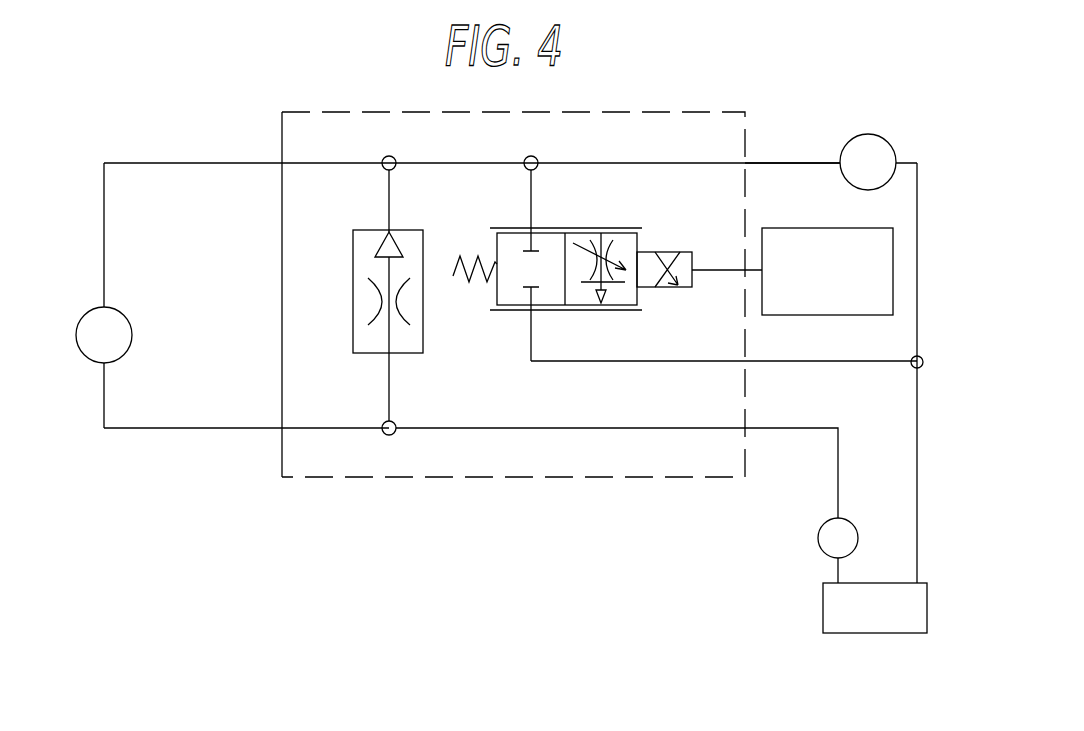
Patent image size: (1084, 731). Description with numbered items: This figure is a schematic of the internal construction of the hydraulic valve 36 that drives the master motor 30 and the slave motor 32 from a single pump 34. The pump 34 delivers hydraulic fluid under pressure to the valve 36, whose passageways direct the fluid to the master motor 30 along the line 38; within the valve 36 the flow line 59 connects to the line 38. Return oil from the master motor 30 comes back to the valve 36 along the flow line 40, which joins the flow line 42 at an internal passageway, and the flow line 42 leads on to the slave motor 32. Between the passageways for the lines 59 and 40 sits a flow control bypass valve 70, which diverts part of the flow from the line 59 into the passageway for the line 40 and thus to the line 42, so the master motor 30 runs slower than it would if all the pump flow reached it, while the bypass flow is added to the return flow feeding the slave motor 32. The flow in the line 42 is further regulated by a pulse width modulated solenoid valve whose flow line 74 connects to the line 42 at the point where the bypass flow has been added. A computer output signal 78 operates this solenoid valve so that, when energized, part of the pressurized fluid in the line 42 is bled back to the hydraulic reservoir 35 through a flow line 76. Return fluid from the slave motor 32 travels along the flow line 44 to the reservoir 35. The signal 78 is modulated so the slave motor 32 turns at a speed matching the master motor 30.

The master motor 30 is at (119, 309).
The slave motor 32 is at (862, 133).
The pump 34 is at (818, 531).
The hydraulic reservoir 35 is at (823, 603).
The hydraulic valve 36 is at (282, 143).
The line 38 is at (175, 427).
The flow line 40 is at (152, 161).
The flow line 42 is at (776, 161).
The flow line 44 is at (917, 328).
The flow line 59 is at (444, 427).
The flow control bypass valve 70 is at (352, 283).
The flow line 74 is at (531, 193).
The flow line 76 is at (604, 360).
The computer output signal 78 is at (578, 243).